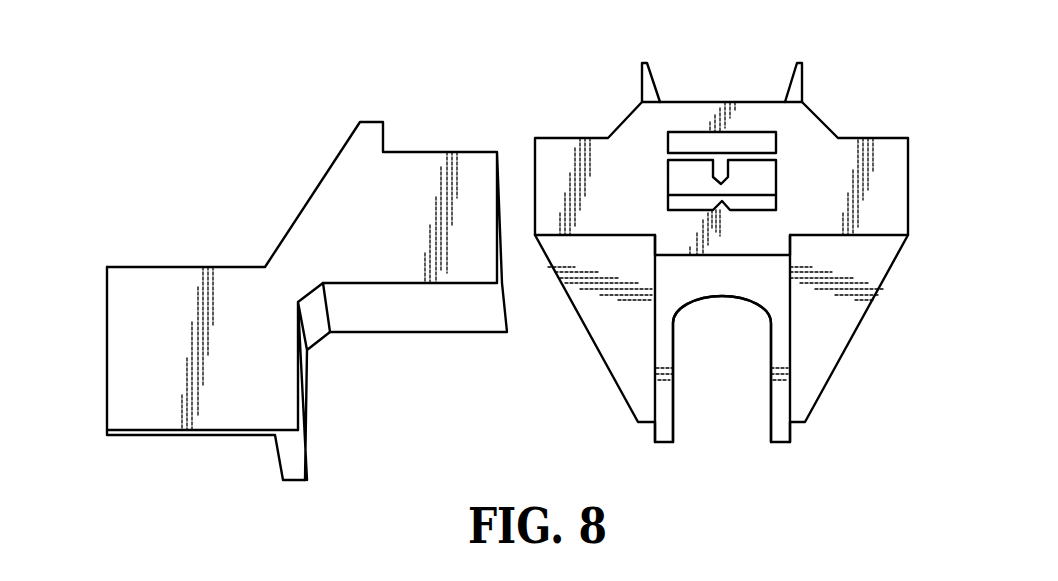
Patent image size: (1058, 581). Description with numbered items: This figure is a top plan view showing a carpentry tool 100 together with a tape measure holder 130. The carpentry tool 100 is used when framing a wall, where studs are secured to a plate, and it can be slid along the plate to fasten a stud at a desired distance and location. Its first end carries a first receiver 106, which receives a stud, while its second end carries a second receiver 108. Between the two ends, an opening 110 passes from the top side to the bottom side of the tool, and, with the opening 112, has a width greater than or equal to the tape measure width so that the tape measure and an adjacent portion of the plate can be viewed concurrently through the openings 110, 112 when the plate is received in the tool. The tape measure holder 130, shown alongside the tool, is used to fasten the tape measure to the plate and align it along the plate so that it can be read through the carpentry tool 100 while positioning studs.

The carpentry tool 100 is at (570, 112).
The first receiver 106 is at (677, 75).
The second receiver 108 is at (731, 384).
The opening 110 is at (753, 183).
The opening 112 is at (777, 138).
The tape measure holder 130 is at (132, 241).